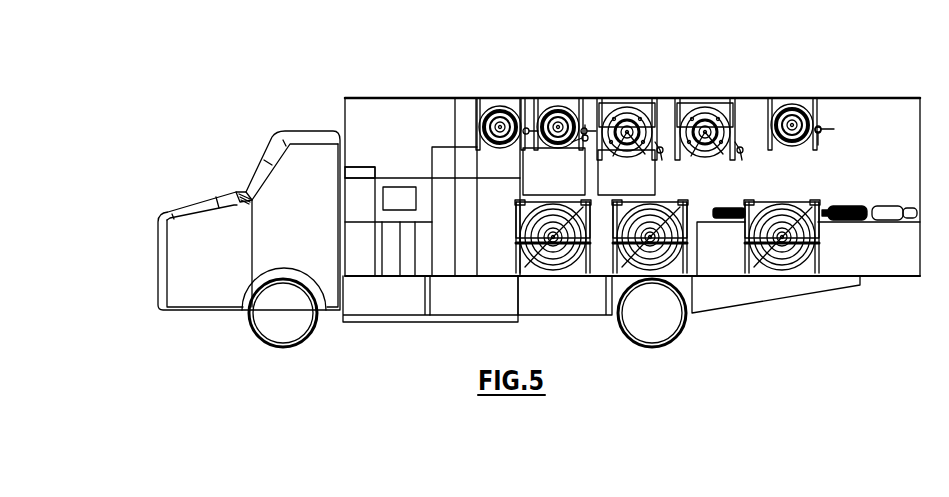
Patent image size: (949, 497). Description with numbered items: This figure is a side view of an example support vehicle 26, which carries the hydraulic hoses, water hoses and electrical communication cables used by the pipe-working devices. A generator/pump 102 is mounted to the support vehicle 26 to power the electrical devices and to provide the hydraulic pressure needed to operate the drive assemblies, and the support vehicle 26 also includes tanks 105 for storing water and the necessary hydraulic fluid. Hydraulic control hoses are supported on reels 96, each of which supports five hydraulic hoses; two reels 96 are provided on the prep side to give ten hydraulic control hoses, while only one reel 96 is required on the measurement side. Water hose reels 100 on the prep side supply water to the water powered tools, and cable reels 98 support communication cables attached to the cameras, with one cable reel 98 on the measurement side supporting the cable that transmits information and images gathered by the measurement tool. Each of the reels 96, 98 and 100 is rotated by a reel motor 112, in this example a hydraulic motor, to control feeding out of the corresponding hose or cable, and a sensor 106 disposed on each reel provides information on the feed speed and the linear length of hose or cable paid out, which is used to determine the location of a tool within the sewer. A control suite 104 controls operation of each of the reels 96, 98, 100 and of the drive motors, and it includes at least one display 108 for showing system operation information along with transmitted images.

The support vehicle 26 is at (236, 122).
The reel 96 is at (612, 276).
The cable reel 98 is at (500, 100).
The water hose reel 100 is at (705, 108).
The generator/pump 102 is at (397, 305).
The control suite 104 is at (380, 170).
The tank 105 is at (478, 305).
The sensor 106 is at (562, 132).
The display 108 is at (400, 192).
The reel motor 112 is at (530, 202).